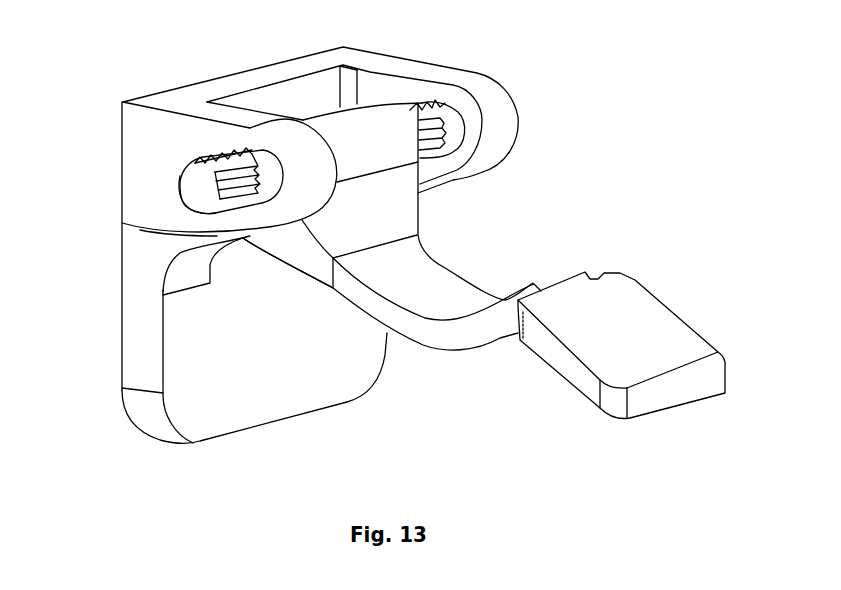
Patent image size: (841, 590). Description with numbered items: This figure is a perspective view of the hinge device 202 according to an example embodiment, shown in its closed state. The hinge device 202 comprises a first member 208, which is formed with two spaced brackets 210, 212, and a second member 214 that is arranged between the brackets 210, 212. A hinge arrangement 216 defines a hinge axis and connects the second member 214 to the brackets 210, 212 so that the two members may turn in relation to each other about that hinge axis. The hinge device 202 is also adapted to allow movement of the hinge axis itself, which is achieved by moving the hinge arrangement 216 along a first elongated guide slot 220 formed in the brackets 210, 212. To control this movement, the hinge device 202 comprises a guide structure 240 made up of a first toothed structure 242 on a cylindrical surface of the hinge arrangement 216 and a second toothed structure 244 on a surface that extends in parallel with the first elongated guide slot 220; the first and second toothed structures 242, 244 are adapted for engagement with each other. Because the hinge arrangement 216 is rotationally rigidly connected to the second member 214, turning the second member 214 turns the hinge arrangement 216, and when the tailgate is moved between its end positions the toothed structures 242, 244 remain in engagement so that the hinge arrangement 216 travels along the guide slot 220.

The hinge device 202 is at (603, 127).
The first member 208 is at (198, 392).
The bracket 210 is at (247, 117).
The bracket 212 is at (413, 67).
The second member 214 is at (427, 283).
The hinge arrangement 216 is at (197, 200).
The first elongated guide slot 220 is at (140, 230).
The guide structure 240 is at (253, 268).
The first toothed structure 242 is at (203, 190).
The second toothed structure 244 is at (240, 152).